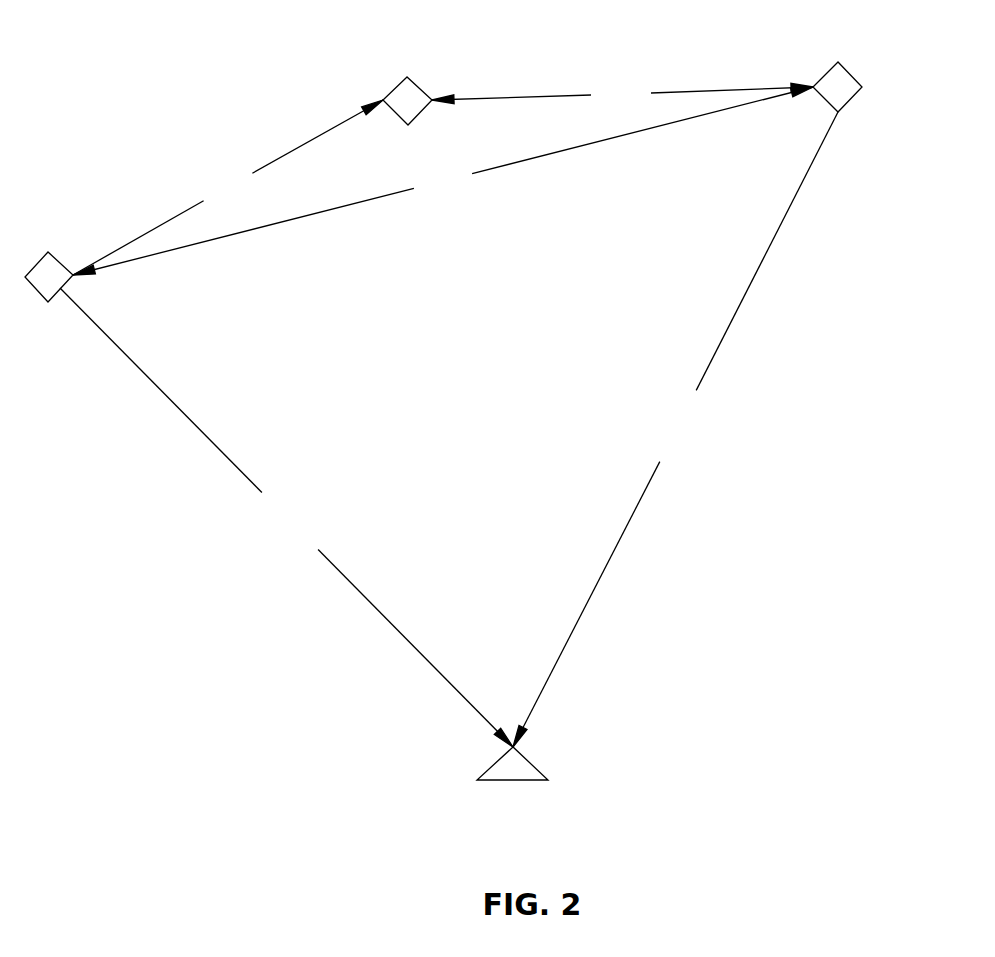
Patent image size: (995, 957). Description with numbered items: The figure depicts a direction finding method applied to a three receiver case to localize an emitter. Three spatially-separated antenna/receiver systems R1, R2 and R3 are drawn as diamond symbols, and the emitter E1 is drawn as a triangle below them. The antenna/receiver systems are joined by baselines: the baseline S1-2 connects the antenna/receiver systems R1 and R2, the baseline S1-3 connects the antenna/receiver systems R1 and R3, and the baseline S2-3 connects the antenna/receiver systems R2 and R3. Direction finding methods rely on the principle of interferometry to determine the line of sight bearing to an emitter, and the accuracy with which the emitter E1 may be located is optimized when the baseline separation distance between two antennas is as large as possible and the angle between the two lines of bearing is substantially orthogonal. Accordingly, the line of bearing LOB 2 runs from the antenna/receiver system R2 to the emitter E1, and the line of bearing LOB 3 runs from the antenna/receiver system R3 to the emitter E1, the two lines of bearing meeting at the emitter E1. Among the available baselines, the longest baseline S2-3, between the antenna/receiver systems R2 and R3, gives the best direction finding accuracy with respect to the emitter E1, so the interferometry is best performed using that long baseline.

The antenna/receiver system R1 is at (407, 77).
The antenna/receiver system R2 is at (838, 62).
The antenna/receiver system R3 is at (48, 252).
The emitter E1 is at (540, 770).
The baseline S1-2 is at (622, 94).
The baseline S1-3 is at (228, 187).
The longest baseline S2-3 is at (443, 181).
The line of bearing LOB 2 is at (675, 429).
The line of bearing LOB 3 is at (286, 517).